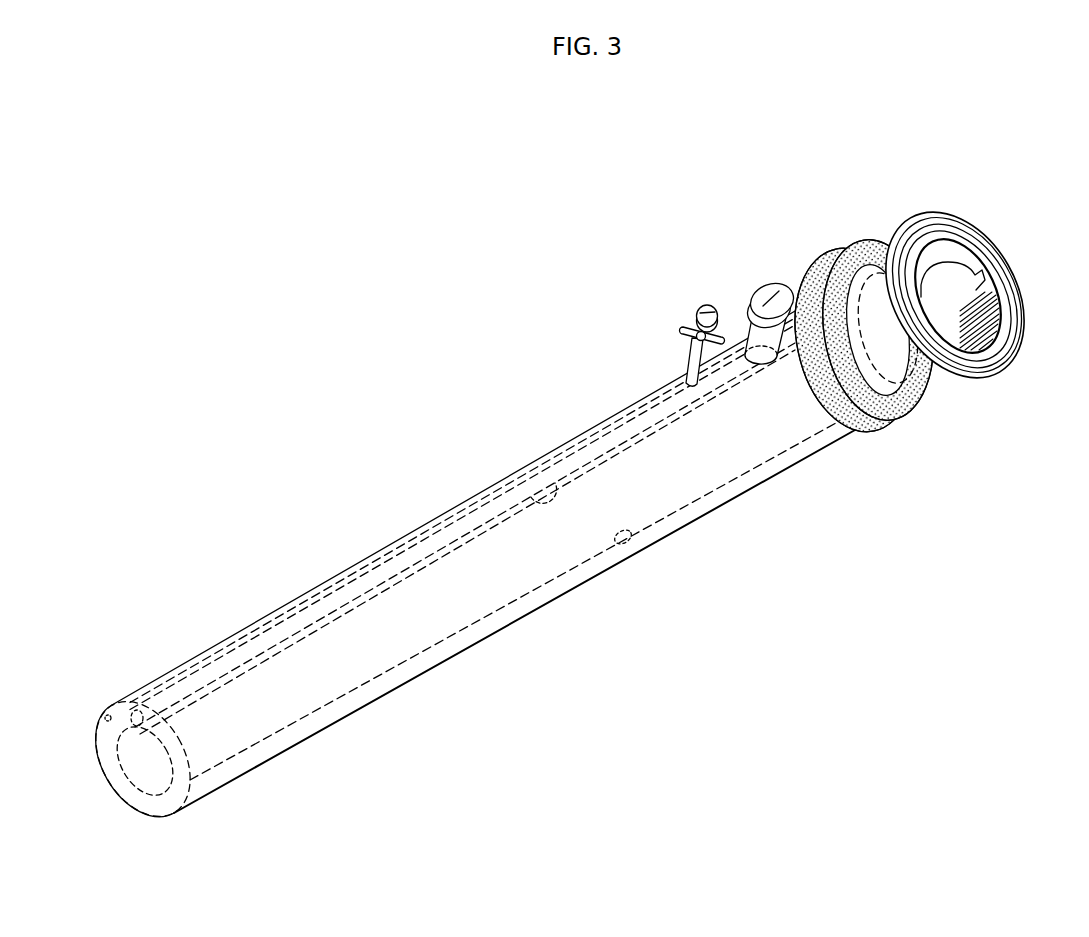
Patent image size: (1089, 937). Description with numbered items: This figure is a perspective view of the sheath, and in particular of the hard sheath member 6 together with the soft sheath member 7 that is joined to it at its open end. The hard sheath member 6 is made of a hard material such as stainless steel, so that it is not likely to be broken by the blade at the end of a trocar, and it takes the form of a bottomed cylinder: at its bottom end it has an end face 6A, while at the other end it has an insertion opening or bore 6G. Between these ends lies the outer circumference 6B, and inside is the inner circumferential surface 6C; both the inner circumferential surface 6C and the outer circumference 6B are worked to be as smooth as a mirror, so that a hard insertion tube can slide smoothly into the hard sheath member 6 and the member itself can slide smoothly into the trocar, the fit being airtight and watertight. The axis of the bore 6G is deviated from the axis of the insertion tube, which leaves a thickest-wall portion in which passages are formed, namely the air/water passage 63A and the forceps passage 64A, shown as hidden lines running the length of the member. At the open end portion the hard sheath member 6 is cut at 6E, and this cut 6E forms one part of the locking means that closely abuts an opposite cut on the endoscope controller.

The hard sheath member 6 is at (738, 462).
The end face 6A is at (135, 795).
The outer circumference 6B is at (458, 621).
The inner circumferential surface 6C is at (628, 548).
The cut 6E is at (973, 263).
The insertion opening or bore 6G is at (948, 290).
The soft sheath member 7 is at (918, 420).
The air/water passage 63A is at (592, 430).
The forceps passage 64A is at (530, 487).